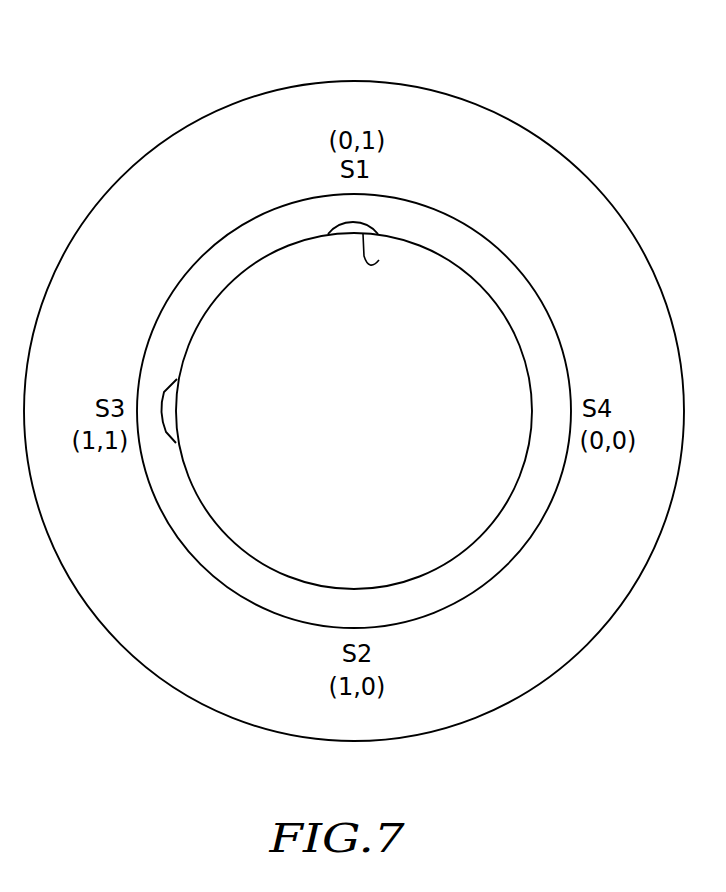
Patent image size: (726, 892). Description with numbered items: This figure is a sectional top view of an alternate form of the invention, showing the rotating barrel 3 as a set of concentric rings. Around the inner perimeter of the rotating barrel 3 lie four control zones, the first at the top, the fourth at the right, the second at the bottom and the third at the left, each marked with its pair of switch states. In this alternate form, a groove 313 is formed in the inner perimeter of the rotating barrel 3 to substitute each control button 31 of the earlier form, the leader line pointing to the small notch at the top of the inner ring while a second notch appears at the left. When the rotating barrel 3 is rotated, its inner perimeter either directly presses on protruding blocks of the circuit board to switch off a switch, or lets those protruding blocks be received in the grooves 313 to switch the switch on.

The rotating barrel 3 is at (309, 105).
The control button 31 is at (501, 59).
The groove 313 is at (379, 260).